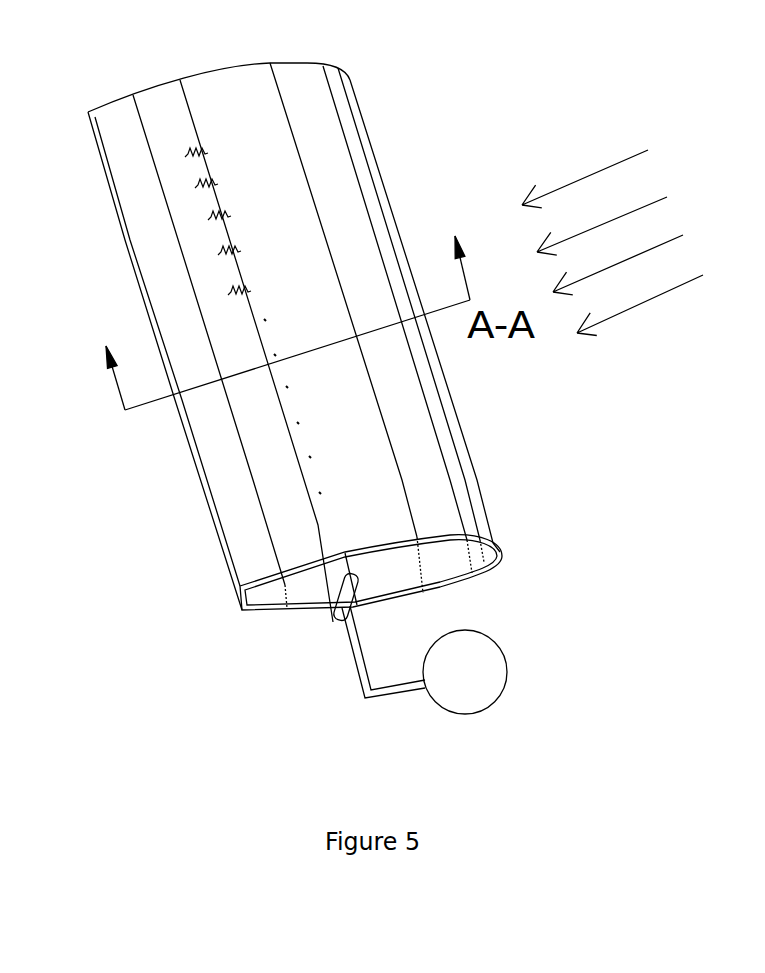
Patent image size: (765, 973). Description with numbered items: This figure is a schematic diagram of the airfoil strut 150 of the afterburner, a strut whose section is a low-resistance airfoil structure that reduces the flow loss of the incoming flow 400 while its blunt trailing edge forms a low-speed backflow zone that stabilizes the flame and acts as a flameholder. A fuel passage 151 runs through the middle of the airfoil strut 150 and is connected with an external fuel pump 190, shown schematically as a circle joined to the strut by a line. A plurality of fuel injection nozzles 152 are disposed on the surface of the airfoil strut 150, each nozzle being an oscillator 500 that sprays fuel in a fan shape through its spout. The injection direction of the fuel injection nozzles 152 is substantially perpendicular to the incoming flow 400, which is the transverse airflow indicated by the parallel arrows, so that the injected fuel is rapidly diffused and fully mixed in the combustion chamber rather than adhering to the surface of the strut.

The airfoil strut 150 is at (395, 232).
The fuel passage 151 is at (340, 605).
The fuel injection nozzle 152 is at (225, 252).
The fuel pump 190 is at (503, 688).
The incoming flow 400 is at (583, 177).
The oscillator 500 is at (193, 152).